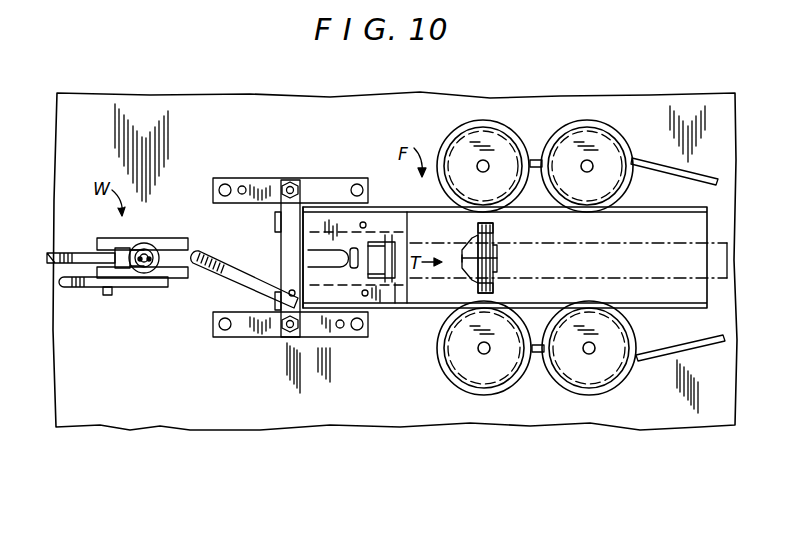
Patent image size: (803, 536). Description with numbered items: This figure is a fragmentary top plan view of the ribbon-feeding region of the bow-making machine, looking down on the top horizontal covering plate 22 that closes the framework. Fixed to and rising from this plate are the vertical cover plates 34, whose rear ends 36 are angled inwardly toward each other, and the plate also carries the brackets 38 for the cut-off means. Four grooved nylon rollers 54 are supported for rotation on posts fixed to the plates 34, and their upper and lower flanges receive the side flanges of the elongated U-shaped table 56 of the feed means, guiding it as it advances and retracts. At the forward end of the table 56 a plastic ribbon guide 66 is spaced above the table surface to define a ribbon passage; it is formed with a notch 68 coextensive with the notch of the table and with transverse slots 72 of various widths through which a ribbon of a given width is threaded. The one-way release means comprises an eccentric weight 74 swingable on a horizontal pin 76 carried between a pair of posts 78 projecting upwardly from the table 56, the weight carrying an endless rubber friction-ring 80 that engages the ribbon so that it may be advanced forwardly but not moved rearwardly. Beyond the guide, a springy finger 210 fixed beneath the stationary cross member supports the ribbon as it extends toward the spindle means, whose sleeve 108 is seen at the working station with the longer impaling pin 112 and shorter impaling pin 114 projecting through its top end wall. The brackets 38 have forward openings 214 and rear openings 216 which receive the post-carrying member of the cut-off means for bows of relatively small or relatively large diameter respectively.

The covering plates 22 is at (187, 414).
The vertical cover plates 34 is at (540, 372).
The rear ends 36 is at (694, 350).
The brackets 38 is at (315, 195).
The nylon rollers 54 is at (612, 138).
The table 56 is at (694, 240).
The ribbon guide 66 is at (382, 220).
The notch 68 is at (312, 257).
The transverse slots 72 is at (393, 307).
The weight 74 is at (466, 272).
The horizontal pin 76 is at (465, 245).
The posts 78 is at (495, 232).
The friction-ring 80 is at (497, 258).
The sleeve 108 is at (147, 272).
The impaling pin 112 is at (136, 250).
The impaling pin 114 is at (152, 250).
The springy finger 210 is at (241, 285).
The forward openings 214 is at (243, 185).
The rear openings 216 is at (340, 330).